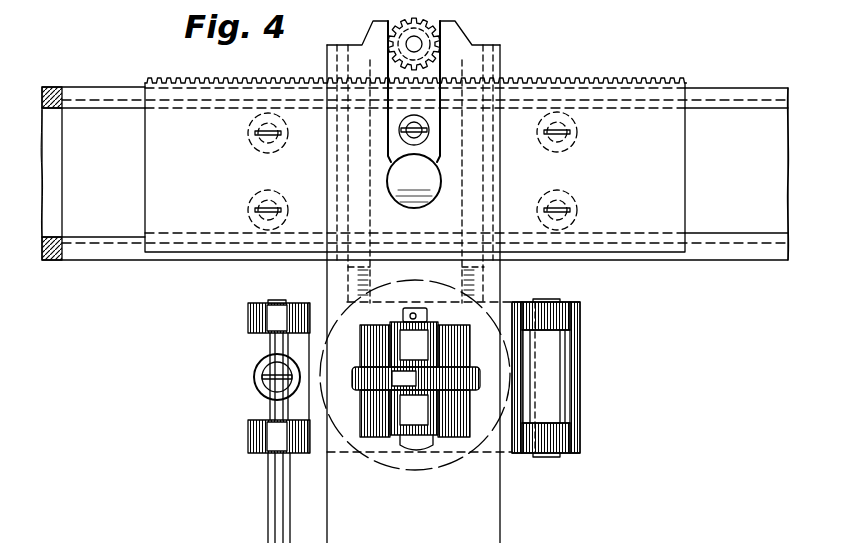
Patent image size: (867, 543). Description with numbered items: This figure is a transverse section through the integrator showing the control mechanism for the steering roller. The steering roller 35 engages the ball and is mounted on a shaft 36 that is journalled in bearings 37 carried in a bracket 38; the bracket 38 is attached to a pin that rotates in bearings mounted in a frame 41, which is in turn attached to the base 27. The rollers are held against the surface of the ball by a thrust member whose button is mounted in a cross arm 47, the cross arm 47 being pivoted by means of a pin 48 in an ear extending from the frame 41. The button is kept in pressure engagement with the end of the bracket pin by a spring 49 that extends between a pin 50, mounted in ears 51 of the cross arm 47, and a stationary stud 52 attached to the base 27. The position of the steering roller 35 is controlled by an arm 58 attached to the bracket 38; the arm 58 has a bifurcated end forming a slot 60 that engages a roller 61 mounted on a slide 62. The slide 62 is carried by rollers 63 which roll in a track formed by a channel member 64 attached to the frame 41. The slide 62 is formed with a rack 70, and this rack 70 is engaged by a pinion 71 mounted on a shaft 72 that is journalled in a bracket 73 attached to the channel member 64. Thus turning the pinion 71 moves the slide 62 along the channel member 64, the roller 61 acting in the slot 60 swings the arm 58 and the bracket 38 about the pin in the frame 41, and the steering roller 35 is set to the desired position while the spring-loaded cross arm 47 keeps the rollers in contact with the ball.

The base 27 is at (193, 538).
The steering roller 35 is at (353, 368).
The shaft 36 is at (415, 308).
The bearings 37 is at (395, 435).
The bracket 38 is at (455, 425).
The frame 41 is at (488, 515).
The cross arm 47 is at (325, 302).
The pin 48 is at (553, 302).
The spring 49 is at (256, 370).
The pin 50 is at (268, 345).
The ears 51 is at (250, 312).
The stationary stud 52 is at (276, 481).
The arm 58 is at (462, 44).
The slot 60 is at (437, 93).
The roller 61 is at (414, 181).
The slide 62 is at (415, 173).
The rollers 63 is at (245, 130).
The channel member 64 is at (80, 118).
The rack 70 is at (210, 80).
The pinion 71 is at (410, 38).
The shaft 72 is at (440, 32).
The bracket 73 is at (500, 53).